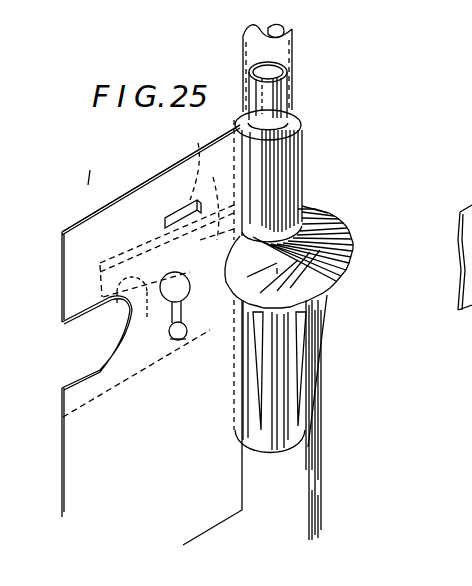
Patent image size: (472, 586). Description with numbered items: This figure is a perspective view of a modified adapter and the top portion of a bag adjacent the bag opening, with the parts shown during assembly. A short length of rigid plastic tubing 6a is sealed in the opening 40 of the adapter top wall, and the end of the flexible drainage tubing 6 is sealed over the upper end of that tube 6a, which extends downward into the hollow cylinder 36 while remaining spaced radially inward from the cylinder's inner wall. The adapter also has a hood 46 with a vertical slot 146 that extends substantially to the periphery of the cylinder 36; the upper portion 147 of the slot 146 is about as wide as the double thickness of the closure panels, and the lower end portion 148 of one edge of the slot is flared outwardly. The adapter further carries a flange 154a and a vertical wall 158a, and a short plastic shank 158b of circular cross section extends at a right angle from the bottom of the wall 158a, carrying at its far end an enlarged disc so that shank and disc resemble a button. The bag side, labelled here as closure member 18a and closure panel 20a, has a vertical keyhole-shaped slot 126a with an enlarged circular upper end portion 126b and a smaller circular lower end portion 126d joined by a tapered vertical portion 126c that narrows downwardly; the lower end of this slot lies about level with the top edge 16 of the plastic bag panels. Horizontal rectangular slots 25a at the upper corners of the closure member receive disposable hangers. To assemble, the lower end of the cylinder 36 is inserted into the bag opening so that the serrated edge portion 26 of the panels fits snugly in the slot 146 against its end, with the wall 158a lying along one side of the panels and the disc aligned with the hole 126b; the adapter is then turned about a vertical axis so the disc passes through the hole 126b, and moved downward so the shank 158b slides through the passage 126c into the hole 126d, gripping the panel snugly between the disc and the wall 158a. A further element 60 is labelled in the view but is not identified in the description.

The flexible drainage tubing 6 is at (305, 52).
The rigid plastic tubing 6a is at (282, 98).
The opening 40 is at (285, 133).
The serrated edge portion of the panels 26 is at (243, 183).
The hood 46 is at (303, 216).
The upper portion of slot 147 is at (320, 227).
The slot 146 is at (250, 257).
The lower end portion of slot edge 148 is at (290, 287).
The slot 60 is at (300, 332).
The hollow member 36 is at (278, 365).
The bracket plate 20a is at (72, 269).
The plate upper edge 18a is at (118, 181).
The top edge of the plastic bag panels 16 is at (93, 425).
The shank 158b is at (116, 305).
The flange 154a is at (167, 230).
The vertical wall 158a is at (160, 257).
The horizontal rectangular shaped slots 25a is at (202, 143).
The keyhole-shaped slot 126a is at (218, 398).
The enlarged circular-shaped upper end portion 126b is at (250, 257).
The tapered vertical portion 126c is at (235, 328).
The smaller circular-shaped lower end portion 126d is at (175, 345).